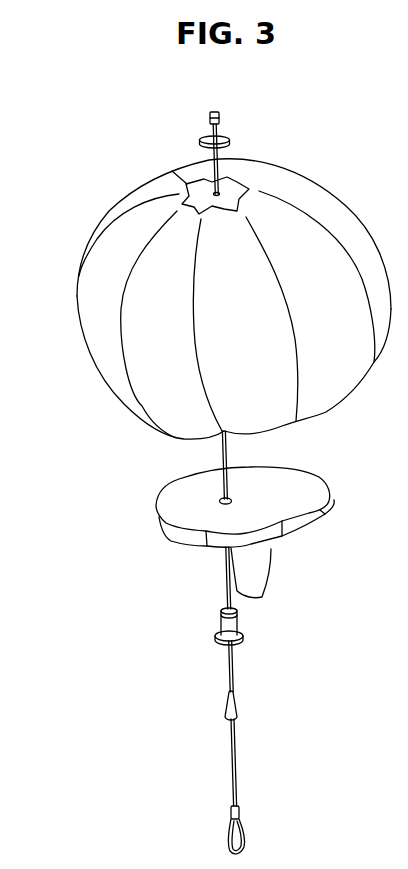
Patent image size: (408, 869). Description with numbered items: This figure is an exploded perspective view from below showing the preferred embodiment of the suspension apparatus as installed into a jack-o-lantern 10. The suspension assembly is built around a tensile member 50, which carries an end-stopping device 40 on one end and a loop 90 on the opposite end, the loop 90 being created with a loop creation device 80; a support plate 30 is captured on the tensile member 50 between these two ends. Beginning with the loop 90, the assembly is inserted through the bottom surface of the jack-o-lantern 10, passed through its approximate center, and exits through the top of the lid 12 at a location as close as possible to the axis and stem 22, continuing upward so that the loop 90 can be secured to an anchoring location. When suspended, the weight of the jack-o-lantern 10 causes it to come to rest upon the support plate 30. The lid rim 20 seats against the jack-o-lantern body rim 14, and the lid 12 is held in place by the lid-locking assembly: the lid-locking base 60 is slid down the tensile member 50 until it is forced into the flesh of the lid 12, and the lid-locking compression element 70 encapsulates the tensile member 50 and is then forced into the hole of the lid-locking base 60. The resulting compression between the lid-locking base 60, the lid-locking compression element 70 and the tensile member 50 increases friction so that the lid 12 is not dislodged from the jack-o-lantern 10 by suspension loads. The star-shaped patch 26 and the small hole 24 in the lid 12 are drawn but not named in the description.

The jack-o-lantern 10 is at (153, 323).
The lid 12 is at (267, 497).
The jack-o-lantern body rim 14 is at (177, 438).
The lid rim 20 is at (185, 535).
The stem 22 is at (252, 567).
The hole 24 is at (220, 502).
The patch 26 is at (222, 193).
The support plate 30 is at (226, 140).
The end-stopping device 40 is at (210, 121).
The tensile member 50 is at (215, 164).
The lid-locking base 60 is at (232, 627).
The lid-locking compression element 70 is at (232, 710).
The loop creation device 80 is at (240, 813).
The loop 90 is at (230, 840).